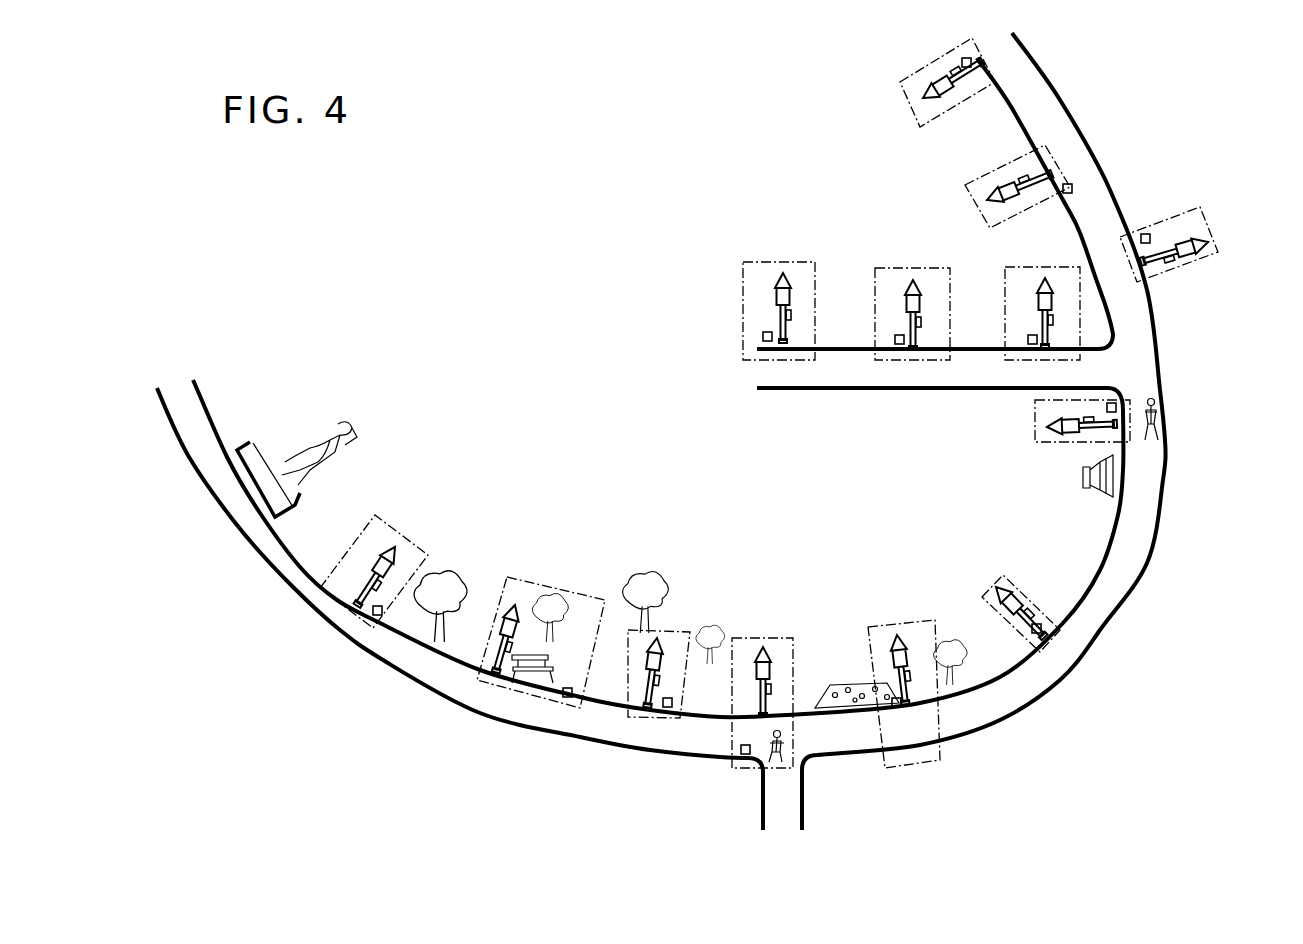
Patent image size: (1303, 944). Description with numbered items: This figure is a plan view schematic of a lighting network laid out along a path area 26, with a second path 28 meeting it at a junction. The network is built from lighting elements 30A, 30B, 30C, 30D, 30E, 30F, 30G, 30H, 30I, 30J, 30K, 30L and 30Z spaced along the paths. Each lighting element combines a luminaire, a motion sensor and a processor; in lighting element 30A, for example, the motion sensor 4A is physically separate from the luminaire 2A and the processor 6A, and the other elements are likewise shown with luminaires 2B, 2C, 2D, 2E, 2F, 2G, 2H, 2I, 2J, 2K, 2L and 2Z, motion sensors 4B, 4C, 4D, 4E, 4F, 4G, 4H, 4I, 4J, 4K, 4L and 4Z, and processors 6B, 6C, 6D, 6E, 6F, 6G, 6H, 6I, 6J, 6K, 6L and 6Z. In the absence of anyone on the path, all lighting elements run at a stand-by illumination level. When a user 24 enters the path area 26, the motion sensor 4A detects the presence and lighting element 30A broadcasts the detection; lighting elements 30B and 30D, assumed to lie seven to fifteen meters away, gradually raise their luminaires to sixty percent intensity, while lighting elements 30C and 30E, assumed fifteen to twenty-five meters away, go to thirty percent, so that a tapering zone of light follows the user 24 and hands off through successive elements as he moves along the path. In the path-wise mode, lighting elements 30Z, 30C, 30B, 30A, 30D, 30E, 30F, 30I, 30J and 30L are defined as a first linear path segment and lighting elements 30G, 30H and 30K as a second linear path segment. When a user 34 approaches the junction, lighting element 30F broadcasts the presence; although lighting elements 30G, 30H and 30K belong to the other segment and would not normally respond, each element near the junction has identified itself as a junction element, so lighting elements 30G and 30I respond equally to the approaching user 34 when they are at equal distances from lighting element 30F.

The luminaire 2A is at (770, 652).
The luminaire 2B is at (663, 637).
The luminaire 2C is at (511, 604).
The luminaire 2D is at (910, 635).
The luminaire 2E is at (1005, 590).
The luminaire 2F is at (1046, 431).
The luminaire 2G is at (1049, 276).
The luminaire 2H is at (918, 277).
The luminaire 2I is at (1212, 240).
The luminaire 2J is at (984, 195).
The luminaire 2K is at (787, 270).
The luminaire 2L is at (918, 105).
The luminaire 2Z is at (392, 547).
The motion sensor 4A is at (740, 754).
The motion sensor 4B is at (668, 708).
The motion sensor 4C is at (567, 697).
The motion sensor 4D is at (890, 708).
The motion sensor 4E is at (1041, 624).
The motion sensor 4F is at (1113, 404).
The motion sensor 4G is at (1030, 346).
The motion sensor 4H is at (898, 345).
The motion sensor 4I is at (1149, 234).
The motion sensor 4J is at (1070, 187).
The motion sensor 4K is at (763, 336).
The motion sensor 4L is at (962, 60).
The motion sensor 4Z is at (377, 614).
The processor 6A is at (774, 689).
The processor 6B is at (663, 681).
The processor 6C is at (507, 650).
The processor 6D is at (912, 674).
The processor 6E is at (1030, 610).
The processor 6F is at (1091, 418).
The processor 6G is at (1058, 321).
The processor 6H is at (925, 321).
The processor 6I is at (1172, 264).
The processor 6J is at (1020, 176).
The processor 6K is at (795, 316).
The processor 6L is at (948, 76).
The processor 6Z is at (380, 584).
The lighting element 30A is at (765, 637).
The lighting element 30B is at (667, 627).
The lighting element 30C is at (550, 587).
The lighting element 30D is at (887, 622).
The lighting element 30E is at (1003, 578).
The lighting element 30F is at (1034, 427).
The lighting element 30G is at (1005, 274).
The lighting element 30H is at (887, 267).
The lighting element 30I is at (1200, 210).
The lighting element 30J is at (980, 207).
The lighting element 30K is at (742, 265).
The lighting element 30L is at (898, 85).
The lighting element 30Z is at (413, 540).
The user 24 is at (778, 762).
The path area 26 is at (420, 670).
The roadway 28 is at (1047, 107).
The user 34 is at (1162, 421).